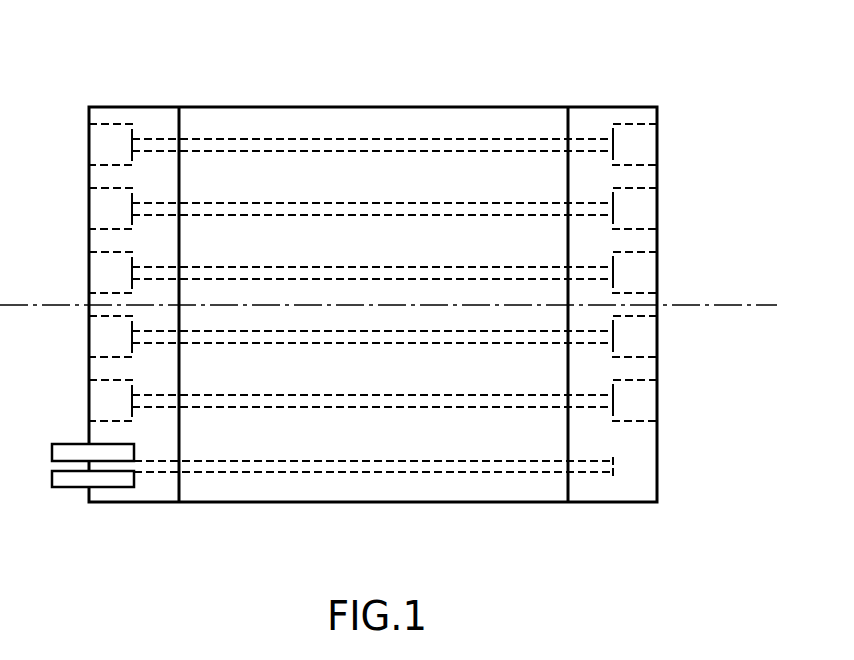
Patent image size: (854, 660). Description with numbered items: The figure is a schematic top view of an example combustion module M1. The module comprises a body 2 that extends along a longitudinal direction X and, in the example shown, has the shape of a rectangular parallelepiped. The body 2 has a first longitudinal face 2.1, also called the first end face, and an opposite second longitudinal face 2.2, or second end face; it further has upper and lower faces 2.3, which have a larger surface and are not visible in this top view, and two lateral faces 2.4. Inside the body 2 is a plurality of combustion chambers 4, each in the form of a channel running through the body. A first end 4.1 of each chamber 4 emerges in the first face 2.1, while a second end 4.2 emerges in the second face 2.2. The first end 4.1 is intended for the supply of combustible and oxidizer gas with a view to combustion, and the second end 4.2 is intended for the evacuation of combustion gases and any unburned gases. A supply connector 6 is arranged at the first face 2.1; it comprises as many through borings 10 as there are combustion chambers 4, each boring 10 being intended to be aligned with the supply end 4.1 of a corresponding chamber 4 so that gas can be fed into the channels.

The combustion module M1 is at (432, 66).
The body 2 is at (291, 106).
The first longitudinal face 2.1 is at (568, 124).
The second longitudinal face 2.2 is at (179, 122).
The upper and lower faces 2.3 is at (497, 116).
The lateral faces 2.4 is at (362, 107).
The combustion chambers 4 is at (275, 467).
The first end 4.1 is at (572, 467).
The second end 4.2 is at (179, 467).
The supply connector 6 is at (648, 99).
The through borings 10 is at (593, 468).
The longitudinal direction x is at (764, 303).